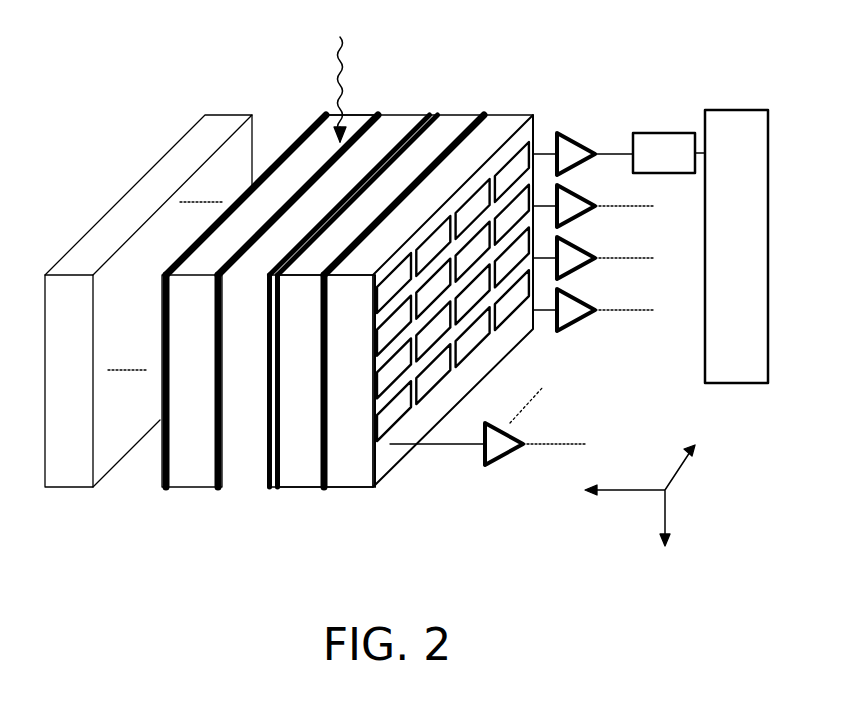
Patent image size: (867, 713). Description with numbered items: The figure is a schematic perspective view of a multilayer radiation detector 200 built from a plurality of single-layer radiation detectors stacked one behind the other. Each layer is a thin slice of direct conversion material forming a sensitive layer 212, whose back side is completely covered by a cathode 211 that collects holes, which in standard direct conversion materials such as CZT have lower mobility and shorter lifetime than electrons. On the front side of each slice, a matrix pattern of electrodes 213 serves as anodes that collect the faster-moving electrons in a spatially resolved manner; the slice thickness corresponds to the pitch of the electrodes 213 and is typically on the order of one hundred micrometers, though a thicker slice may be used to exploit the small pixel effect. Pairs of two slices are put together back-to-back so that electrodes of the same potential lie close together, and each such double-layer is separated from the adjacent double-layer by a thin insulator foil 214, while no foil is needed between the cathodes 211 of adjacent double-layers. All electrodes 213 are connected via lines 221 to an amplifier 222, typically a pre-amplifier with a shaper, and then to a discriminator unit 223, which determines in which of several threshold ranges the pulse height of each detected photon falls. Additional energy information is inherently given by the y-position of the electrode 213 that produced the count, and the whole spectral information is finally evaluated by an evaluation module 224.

The multilayer radiation detector 200 is at (666, 77).
The cathode 211 is at (483, 113).
The sensitive layer 212 is at (503, 123).
The electrode 213 is at (472, 355).
The insulator foil 214 is at (410, 113).
The line 221 is at (541, 153).
The amplifier 222 is at (583, 168).
The discriminator unit 223 is at (680, 165).
The evaluation module 224 is at (753, 257).